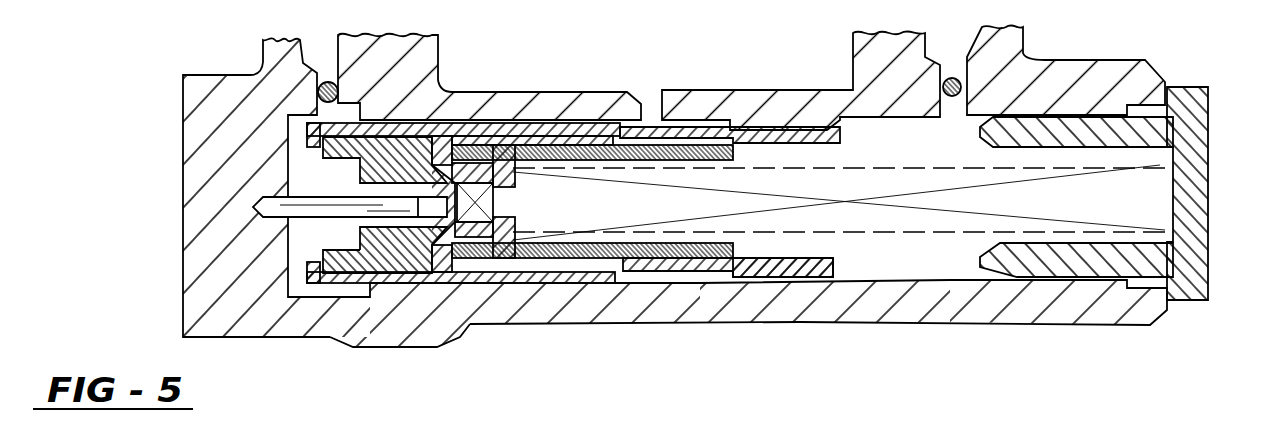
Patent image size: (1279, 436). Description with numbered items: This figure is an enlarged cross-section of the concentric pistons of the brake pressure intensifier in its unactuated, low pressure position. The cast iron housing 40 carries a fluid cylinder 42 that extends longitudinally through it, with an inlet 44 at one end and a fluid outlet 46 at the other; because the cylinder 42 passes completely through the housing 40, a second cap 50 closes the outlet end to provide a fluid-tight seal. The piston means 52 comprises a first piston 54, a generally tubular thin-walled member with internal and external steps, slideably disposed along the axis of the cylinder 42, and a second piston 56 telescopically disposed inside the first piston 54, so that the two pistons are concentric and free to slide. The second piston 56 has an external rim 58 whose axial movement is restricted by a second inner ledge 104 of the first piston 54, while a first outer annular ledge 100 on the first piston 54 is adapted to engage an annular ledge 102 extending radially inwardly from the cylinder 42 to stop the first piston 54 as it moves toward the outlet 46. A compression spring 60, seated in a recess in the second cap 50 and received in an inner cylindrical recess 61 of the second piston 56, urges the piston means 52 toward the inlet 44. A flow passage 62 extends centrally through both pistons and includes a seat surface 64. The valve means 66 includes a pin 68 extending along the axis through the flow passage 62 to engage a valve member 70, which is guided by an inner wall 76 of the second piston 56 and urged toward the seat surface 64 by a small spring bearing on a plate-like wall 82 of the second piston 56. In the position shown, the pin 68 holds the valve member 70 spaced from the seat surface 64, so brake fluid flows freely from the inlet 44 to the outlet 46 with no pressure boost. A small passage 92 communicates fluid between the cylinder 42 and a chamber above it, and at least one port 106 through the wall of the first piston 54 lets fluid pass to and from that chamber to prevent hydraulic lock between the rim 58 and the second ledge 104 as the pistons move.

The housing 40 is at (182, 107).
The fluid cylinder 42 is at (957, 263).
The inlet 44 is at (333, 83).
The fluid outlet 46 is at (958, 80).
The second cap 50 is at (1207, 173).
The piston means 52 is at (407, 296).
The first piston 54 is at (323, 285).
The second piston 56 is at (347, 262).
The rim 58 is at (450, 262).
The compression spring 60 is at (857, 232).
The inner cylindrical recess 61 is at (680, 263).
The flow passage 62 is at (360, 228).
The seat surface 64 is at (430, 137).
The valve means 66 is at (500, 147).
The pin 68 is at (343, 207).
The valve member 70 is at (495, 203).
The inner wall 76 is at (487, 240).
The plate-like wall 82 is at (513, 225).
The small passage 92 is at (661, 110).
The first outer annular ledge 100 is at (697, 268).
The annular ledge 102 is at (697, 270).
The second inner ledge 104 is at (607, 147).
The port 106 is at (625, 275).